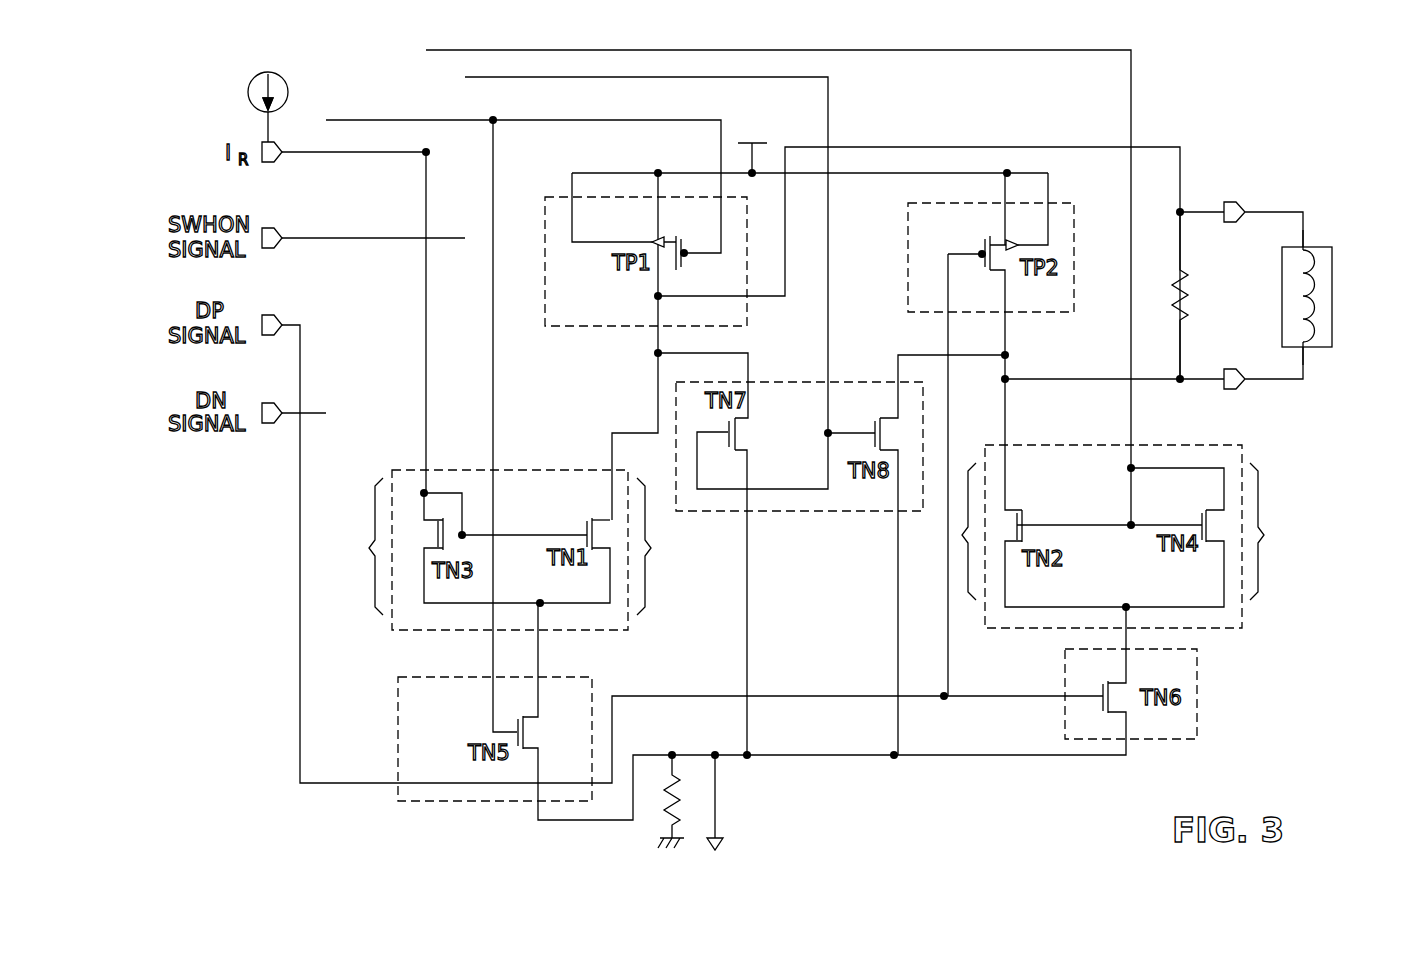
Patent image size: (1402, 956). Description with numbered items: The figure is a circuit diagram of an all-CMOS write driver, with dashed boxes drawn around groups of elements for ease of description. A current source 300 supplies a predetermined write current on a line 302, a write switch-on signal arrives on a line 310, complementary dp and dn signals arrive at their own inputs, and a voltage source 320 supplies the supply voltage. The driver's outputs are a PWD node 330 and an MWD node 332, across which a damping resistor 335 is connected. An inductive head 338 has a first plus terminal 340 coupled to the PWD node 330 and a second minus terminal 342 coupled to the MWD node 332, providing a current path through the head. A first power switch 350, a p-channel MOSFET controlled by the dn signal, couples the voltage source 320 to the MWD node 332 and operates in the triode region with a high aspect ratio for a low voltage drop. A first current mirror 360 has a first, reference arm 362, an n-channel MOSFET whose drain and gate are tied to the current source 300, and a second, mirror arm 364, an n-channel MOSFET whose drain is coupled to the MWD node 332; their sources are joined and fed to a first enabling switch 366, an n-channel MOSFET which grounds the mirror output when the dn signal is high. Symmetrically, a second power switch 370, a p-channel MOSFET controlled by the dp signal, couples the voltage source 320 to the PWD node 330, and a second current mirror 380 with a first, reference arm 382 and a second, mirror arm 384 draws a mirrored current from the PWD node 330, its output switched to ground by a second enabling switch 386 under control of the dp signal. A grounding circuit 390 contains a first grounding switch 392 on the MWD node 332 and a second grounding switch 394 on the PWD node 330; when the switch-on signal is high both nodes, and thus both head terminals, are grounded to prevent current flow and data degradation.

The current source 300 is at (248, 94).
The line 302 is at (306, 160).
The line 310 is at (306, 246).
The voltage source 320 is at (748, 143).
The PWD node 330 is at (1200, 381).
The MWD node 332 is at (1207, 212).
The damping resistor 335 is at (1195, 283).
The inductive head 338 is at (1282, 317).
The first (+w) terminal 340 is at (1305, 348).
The second (−w) terminal 342 is at (1305, 247).
The first power switch 350 is at (600, 327).
The first current mirror 360 is at (541, 470).
The first, reference arm 362 is at (352, 546).
The second, mirror arm 364 is at (668, 546).
The first enabling switch 366 is at (398, 725).
The second power switch 370 is at (908, 247).
The second current mirror 380 is at (1065, 445).
The first, reference arm 382 is at (1282, 531).
The second, mirror arm 384 is at (1005, 466).
The second enabling switch 386 is at (1197, 703).
The grounding circuit 390 is at (790, 382).
The first grounding switch 392 is at (755, 432).
The second grounding switch 394 is at (874, 412).